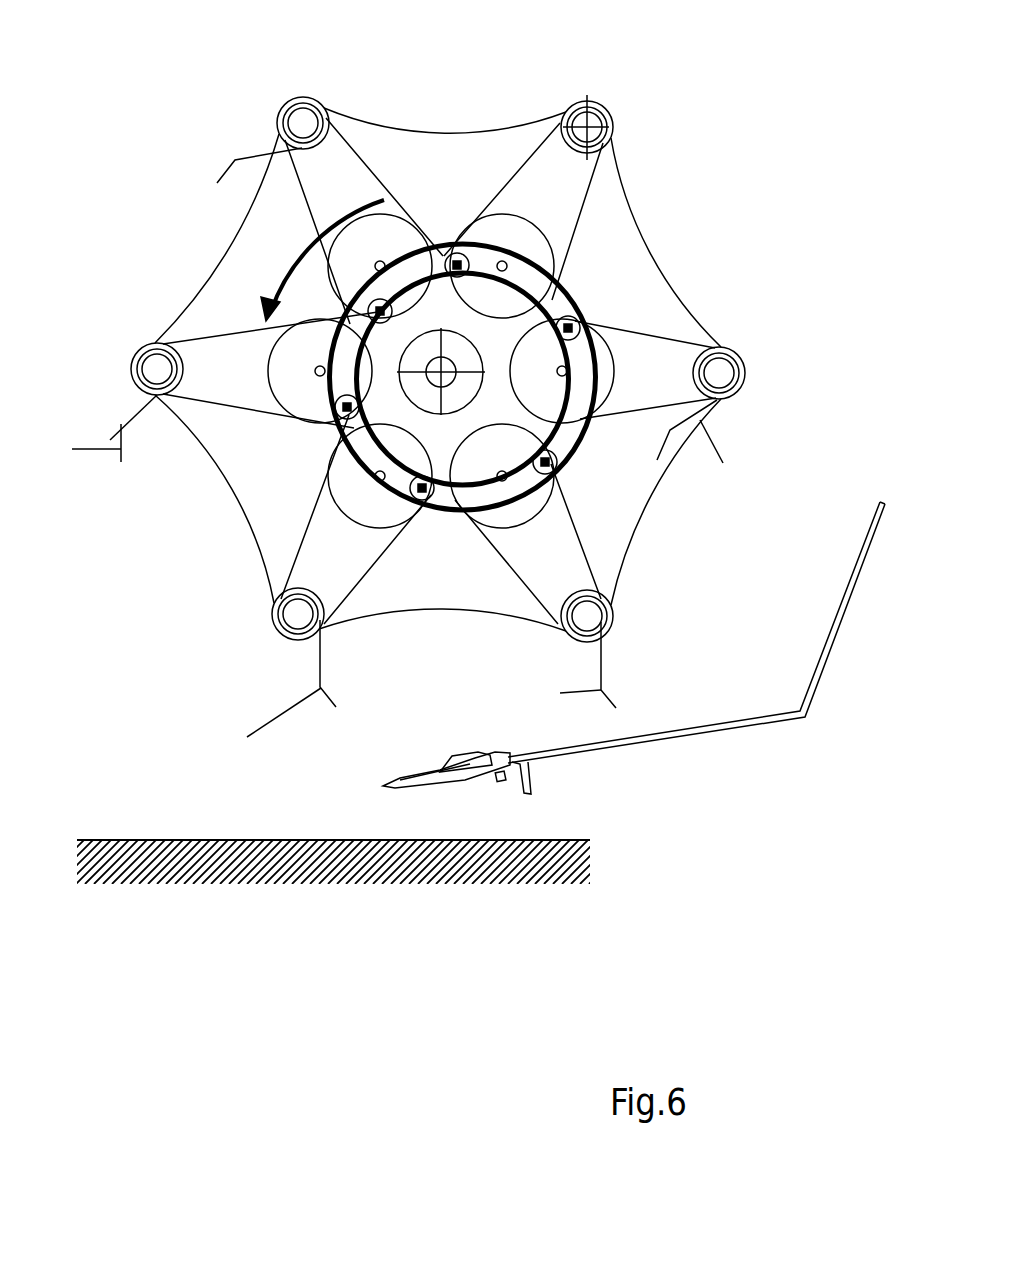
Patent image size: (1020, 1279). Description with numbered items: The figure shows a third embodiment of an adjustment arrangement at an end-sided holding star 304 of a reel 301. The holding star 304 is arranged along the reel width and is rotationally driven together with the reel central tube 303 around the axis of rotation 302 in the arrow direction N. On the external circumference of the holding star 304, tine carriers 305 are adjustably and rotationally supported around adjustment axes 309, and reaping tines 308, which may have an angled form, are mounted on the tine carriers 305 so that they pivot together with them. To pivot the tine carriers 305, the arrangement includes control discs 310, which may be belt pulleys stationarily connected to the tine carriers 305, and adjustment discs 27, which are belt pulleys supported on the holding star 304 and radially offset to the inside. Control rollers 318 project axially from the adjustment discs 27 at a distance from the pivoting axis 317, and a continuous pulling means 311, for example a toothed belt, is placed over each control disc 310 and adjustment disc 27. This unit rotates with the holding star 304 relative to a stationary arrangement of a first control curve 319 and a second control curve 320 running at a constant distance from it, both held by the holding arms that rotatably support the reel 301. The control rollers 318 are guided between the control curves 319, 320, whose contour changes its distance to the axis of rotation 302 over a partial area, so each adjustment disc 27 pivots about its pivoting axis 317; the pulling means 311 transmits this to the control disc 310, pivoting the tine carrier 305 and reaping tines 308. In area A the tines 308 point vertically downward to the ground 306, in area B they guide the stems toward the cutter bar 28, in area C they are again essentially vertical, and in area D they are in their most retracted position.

The reel 301 is at (778, 154).
The holding star 304 is at (438, 375).
The tine carrier 305 is at (302, 122).
The adjustment axis 309 is at (590, 127).
The control disc 310 is at (587, 125).
The pulling means 311 is at (590, 193).
The adjustment disc 27 is at (535, 257).
The pivoting axis 317 is at (504, 478).
The control roller 318 is at (577, 317).
The first control curve 319 is at (353, 453).
The second control curve 320 is at (370, 430).
The reel central tube 303 is at (422, 393).
The axis of rotation 302 is at (452, 377).
The reaping tines 308 is at (132, 430).
The ground 306 is at (160, 840).
The cutter bar 28 is at (506, 781).